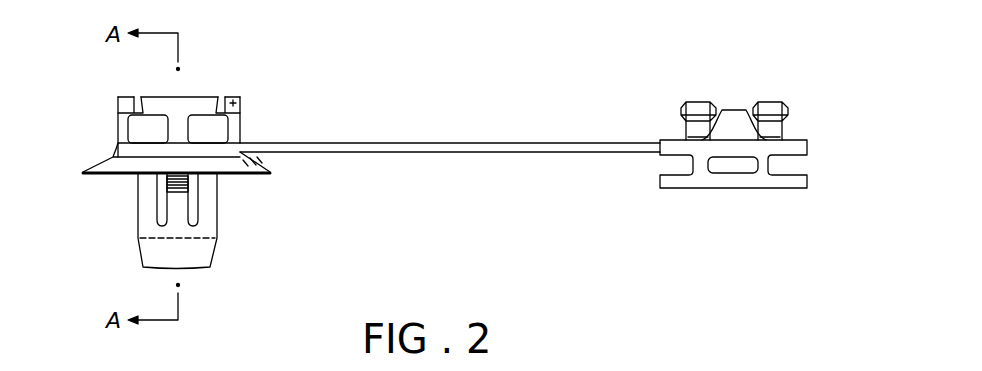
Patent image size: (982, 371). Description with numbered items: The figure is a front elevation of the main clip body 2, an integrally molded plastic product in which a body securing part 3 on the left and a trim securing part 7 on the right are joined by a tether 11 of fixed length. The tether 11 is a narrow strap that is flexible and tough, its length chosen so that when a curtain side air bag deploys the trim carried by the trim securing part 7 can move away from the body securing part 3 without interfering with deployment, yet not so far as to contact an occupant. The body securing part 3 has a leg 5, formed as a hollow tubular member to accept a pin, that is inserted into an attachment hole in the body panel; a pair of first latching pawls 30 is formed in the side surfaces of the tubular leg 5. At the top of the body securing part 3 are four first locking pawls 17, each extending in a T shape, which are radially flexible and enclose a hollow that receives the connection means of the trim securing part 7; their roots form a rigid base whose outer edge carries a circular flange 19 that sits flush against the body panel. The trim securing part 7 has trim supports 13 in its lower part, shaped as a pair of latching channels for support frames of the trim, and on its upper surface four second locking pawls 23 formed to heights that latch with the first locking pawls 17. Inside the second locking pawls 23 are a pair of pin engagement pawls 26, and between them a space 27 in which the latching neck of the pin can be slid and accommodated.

The main clip body 2 is at (543, 90).
The body securing part 3 is at (101, 183).
The leg 5 is at (138, 218).
The trim securing part 7 is at (805, 131).
The tether 11 is at (443, 153).
The trim supports 13 is at (667, 163).
The first locking pawls 17 is at (118, 103).
The circular flange 19 is at (107, 167).
The second locking pawls 23 is at (697, 112).
The pin engagement pawls 26 is at (727, 110).
The space 27 is at (733, 128).
The first latching pawls 30 is at (178, 202).